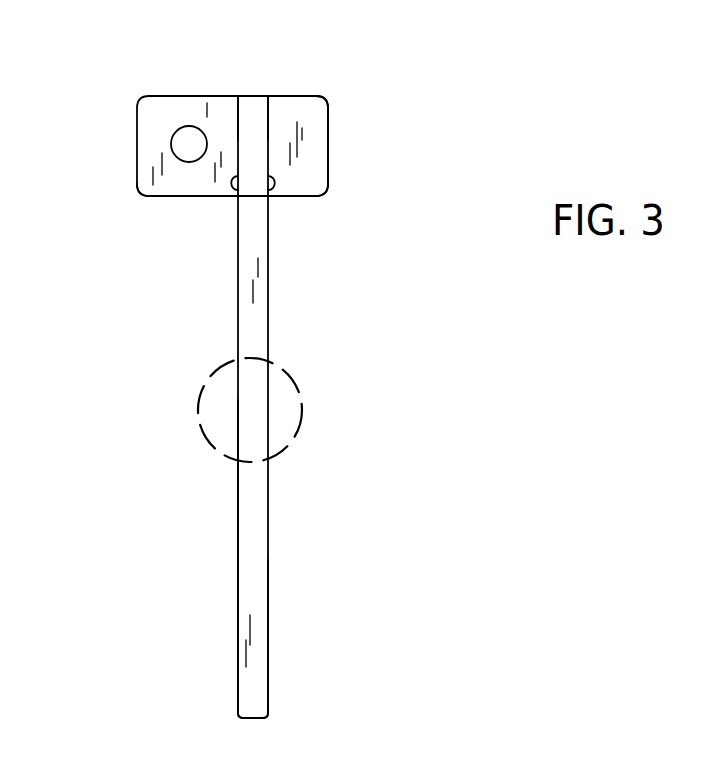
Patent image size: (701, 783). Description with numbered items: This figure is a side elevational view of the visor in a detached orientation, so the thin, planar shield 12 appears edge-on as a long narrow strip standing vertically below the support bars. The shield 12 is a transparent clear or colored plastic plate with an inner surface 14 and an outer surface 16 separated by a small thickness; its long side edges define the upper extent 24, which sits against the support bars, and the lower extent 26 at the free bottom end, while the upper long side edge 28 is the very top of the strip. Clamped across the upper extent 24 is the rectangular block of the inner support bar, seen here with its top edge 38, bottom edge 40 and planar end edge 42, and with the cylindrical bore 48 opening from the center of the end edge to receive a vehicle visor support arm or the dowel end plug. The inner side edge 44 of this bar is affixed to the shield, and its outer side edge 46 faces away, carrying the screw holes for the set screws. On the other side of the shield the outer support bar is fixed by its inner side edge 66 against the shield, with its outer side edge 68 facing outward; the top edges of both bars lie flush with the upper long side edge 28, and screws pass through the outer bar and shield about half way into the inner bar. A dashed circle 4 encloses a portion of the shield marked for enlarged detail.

The detail view circle 4 is at (272, 363).
The shield 12 is at (268, 518).
The inner surface 14 is at (238, 582).
The outer surface 16 is at (268, 645).
The upper extent 24 is at (257, 97).
The lower extent 26 is at (268, 688).
The upper long side edge 28 is at (281, 48).
The top edge 38 is at (210, 100).
The bottom edge 40 is at (192, 196).
The end edges 42 is at (153, 172).
The inner side edge 44 is at (237, 198).
The outer side edge 46 is at (137, 150).
The bore 48 is at (187, 142).
The inner side edge 66 is at (272, 197).
The outer side edge 68 is at (328, 147).